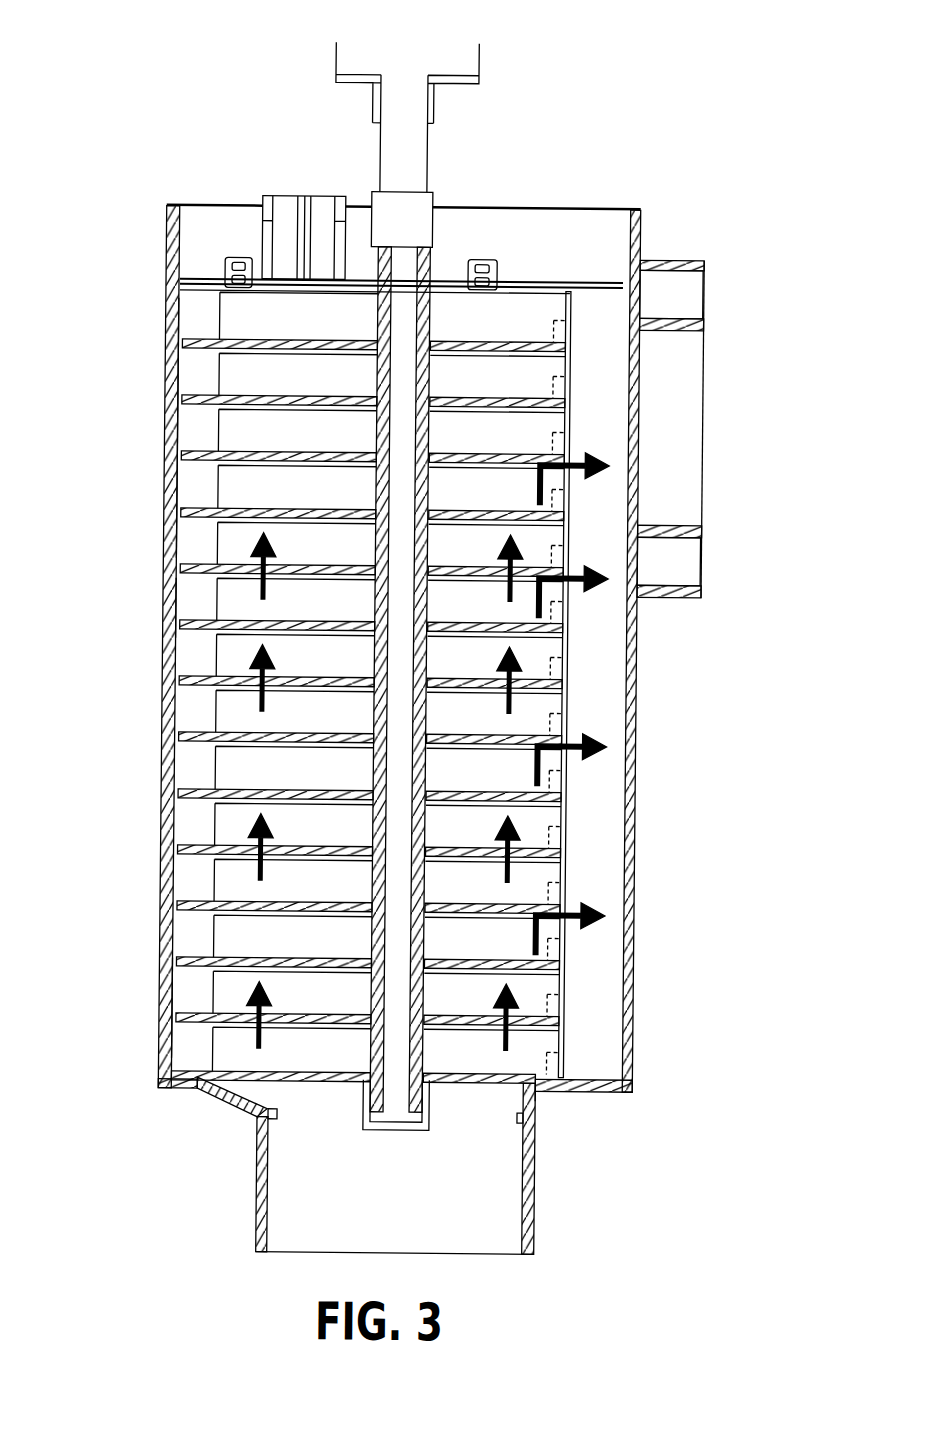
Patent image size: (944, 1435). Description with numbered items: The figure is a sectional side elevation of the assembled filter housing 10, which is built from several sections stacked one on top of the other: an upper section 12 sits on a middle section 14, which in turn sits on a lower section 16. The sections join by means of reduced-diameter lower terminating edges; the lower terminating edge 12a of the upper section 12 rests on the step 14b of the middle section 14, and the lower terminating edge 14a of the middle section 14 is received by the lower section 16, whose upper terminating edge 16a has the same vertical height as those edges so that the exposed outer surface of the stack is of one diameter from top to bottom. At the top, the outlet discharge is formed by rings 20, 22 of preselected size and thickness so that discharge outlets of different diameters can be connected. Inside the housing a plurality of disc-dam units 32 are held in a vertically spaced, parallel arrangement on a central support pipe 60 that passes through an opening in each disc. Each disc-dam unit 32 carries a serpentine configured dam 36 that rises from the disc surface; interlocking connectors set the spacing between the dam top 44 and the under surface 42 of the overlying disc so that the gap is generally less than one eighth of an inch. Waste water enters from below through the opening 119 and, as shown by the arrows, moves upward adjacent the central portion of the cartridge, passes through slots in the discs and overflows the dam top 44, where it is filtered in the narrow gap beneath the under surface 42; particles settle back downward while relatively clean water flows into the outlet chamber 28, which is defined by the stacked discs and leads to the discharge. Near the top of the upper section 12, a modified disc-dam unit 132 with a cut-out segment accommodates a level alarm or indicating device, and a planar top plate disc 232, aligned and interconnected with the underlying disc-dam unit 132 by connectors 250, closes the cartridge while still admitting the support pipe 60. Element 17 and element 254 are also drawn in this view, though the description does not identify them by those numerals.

The filter housing 10 is at (678, 852).
The upper section 12 is at (161, 379).
The lower terminating edge of upper section 12a is at (189, 597).
The middle section 14 is at (166, 795).
The lower terminating edge of middle section 14a is at (189, 597).
The step 14b is at (190, 999).
The lower section 16 is at (636, 1060).
The upper terminating edge of lower section 16a is at (190, 999).
The bottom outlet flange 17 is at (547, 1091).
The ring 20 is at (699, 263).
The ring 22 is at (699, 321).
The outlet chamber 28 is at (606, 823).
The disc-dam unit 32 is at (567, 700).
The serpentine configured dam 36 is at (225, 672).
The under surface 42 is at (565, 345).
The dam top 44 is at (559, 631).
The support pipe 60 is at (423, 259).
The opening 119 is at (440, 1235).
The disc-dam unit with cut out segment 132 is at (183, 341).
The top plate disc 232 is at (568, 304).
The connectors 250 is at (235, 260).
The fitting 254 is at (258, 198).